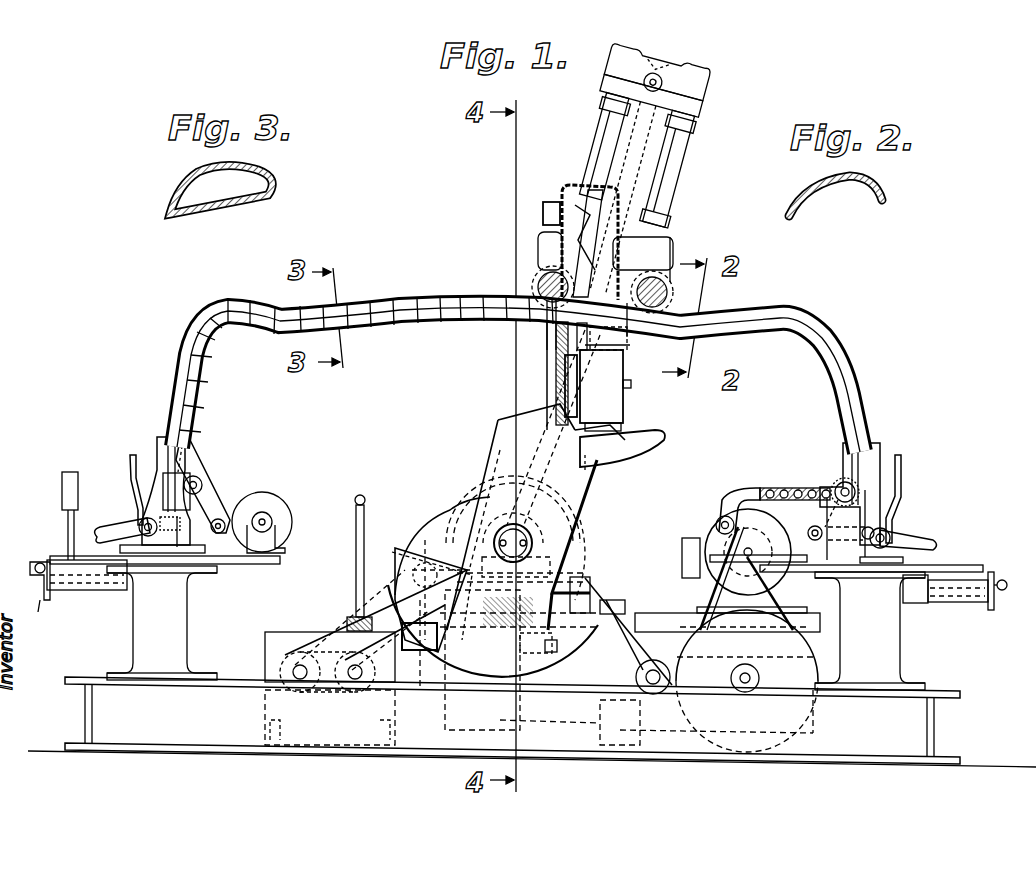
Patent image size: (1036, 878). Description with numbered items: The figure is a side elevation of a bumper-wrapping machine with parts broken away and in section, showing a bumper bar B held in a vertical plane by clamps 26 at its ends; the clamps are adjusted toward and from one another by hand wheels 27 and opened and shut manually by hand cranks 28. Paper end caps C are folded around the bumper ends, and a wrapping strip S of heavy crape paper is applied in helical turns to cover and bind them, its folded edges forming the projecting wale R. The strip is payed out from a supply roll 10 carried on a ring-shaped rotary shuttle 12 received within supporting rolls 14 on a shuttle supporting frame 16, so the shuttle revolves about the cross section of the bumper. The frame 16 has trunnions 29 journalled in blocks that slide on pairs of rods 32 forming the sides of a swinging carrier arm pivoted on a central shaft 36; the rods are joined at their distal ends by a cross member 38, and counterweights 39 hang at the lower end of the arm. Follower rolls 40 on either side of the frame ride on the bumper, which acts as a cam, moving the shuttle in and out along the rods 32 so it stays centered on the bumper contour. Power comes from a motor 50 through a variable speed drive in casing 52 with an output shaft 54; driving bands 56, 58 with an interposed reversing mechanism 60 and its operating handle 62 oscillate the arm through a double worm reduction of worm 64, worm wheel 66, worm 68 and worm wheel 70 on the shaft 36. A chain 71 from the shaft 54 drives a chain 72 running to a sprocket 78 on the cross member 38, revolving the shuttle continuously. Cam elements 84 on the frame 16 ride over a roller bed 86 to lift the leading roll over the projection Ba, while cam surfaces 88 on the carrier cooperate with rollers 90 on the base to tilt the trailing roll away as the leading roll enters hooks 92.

In FIG. 1, the supply roll 10 is at (625, 383).
In FIG. 1, the rotary shuttle 12 is at (572, 372).
In FIG. 1, the supporting rolls 14 is at (606, 182).
In FIG. 1, the shuttle supporting frame 16 is at (562, 190).
In FIG. 1, the clamps 26 is at (183, 448).
In FIG. 1, the hand wheels 27 is at (42, 600).
In FIG. 1, the hand cranks 28 is at (118, 528).
In FIG. 1, the trunnions 29 is at (635, 332).
In FIG. 1, the rods 32 is at (592, 157).
In FIG. 1, the shaft 36 is at (530, 540).
In FIG. 1, the cross member 38 is at (684, 93).
In FIG. 1, the counterweights 39 is at (400, 550).
In FIG. 1, the follower rolls 40 is at (541, 280).
In FIG. 1, the motor 50 is at (710, 535).
In FIG. 1, the casing 52 is at (660, 640).
In FIG. 1, the output shaft 54 is at (653, 690).
In FIG. 1, the driving band 56 is at (528, 695).
In FIG. 1, the driving band 58 is at (348, 622).
In FIG. 1, the reversing mechanism 60 is at (268, 652).
In FIG. 1, the operating handle 62 is at (364, 530).
In FIG. 1, the worm 64 is at (425, 552).
In FIG. 1, the worm wheel 66 is at (420, 690).
In FIG. 1, the worm 68 is at (555, 644).
In FIG. 1, the worm wheel 70 is at (578, 548).
In FIG. 1, the chain 71 is at (612, 628).
In FIG. 1, the chain 72 is at (652, 146).
In FIG. 1, the sprocket 78 is at (652, 68).
In FIG. 1, the cam elements 84 is at (625, 452).
In FIG. 1, the roller bed 86 is at (793, 490).
In FIG. 1, the cam surfaces 88 is at (540, 408).
In FIG. 1, the rollers 90 is at (280, 516).
In FIG. 1, the hooks 92 is at (130, 467).
In FIG. 1, the bumper bar B is at (765, 320).
In FIG. 2, the bumper bar B is at (835, 196).
In FIG. 1, the projection Ba is at (222, 318).
In FIG. 3, the projection Ba is at (221, 189).
In FIG. 1, the end caps C is at (160, 427).
In FIG. 1, the wale R is at (388, 300).
In FIG. 1, the wrapping strip S is at (449, 300).